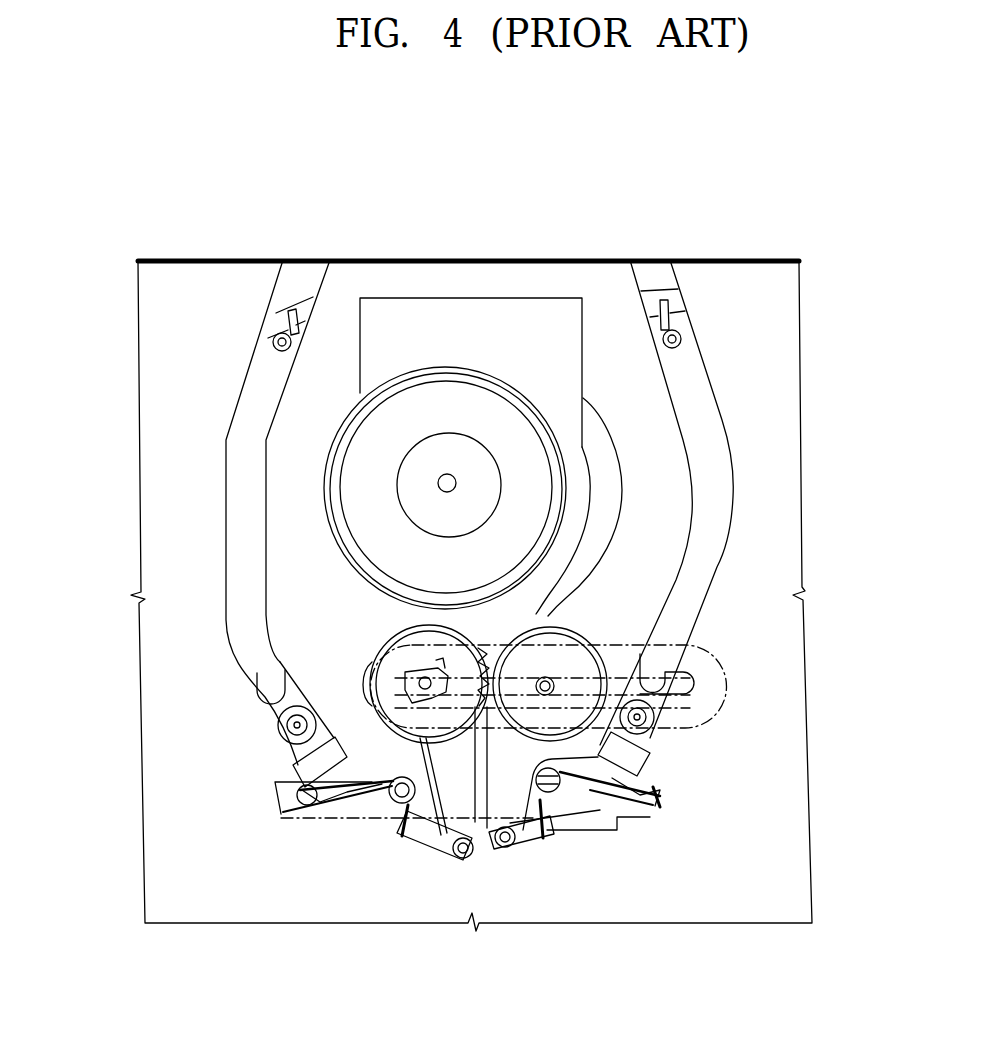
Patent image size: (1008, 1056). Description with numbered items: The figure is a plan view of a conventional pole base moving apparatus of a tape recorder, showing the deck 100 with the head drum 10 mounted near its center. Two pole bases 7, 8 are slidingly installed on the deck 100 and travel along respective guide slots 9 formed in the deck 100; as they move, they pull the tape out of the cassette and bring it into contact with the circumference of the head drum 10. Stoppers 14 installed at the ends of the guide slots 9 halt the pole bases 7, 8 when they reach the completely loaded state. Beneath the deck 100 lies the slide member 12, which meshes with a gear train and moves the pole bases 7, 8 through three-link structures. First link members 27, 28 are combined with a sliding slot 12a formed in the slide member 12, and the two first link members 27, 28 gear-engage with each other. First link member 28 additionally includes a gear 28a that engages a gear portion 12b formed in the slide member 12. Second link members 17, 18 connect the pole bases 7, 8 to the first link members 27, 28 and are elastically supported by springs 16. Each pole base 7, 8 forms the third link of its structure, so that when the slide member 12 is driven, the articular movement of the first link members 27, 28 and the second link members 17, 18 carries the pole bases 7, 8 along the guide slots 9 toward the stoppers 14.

The deck 100 is at (222, 272).
The head drum 10 is at (465, 400).
The guide slots 9 is at (267, 367).
The stoppers 14 is at (303, 308).
The pole base 8 is at (270, 704).
The pole base 7 is at (690, 670).
The slide member 12 is at (715, 695).
The sliding slot 12a is at (700, 684).
The gear portion 12b is at (378, 682).
The gear 28a is at (440, 663).
The first link member 27 is at (490, 805).
The first link member 28 is at (437, 840).
The second link member 18 is at (410, 830).
The second link member 17 is at (555, 832).
The springs 16 is at (288, 808).